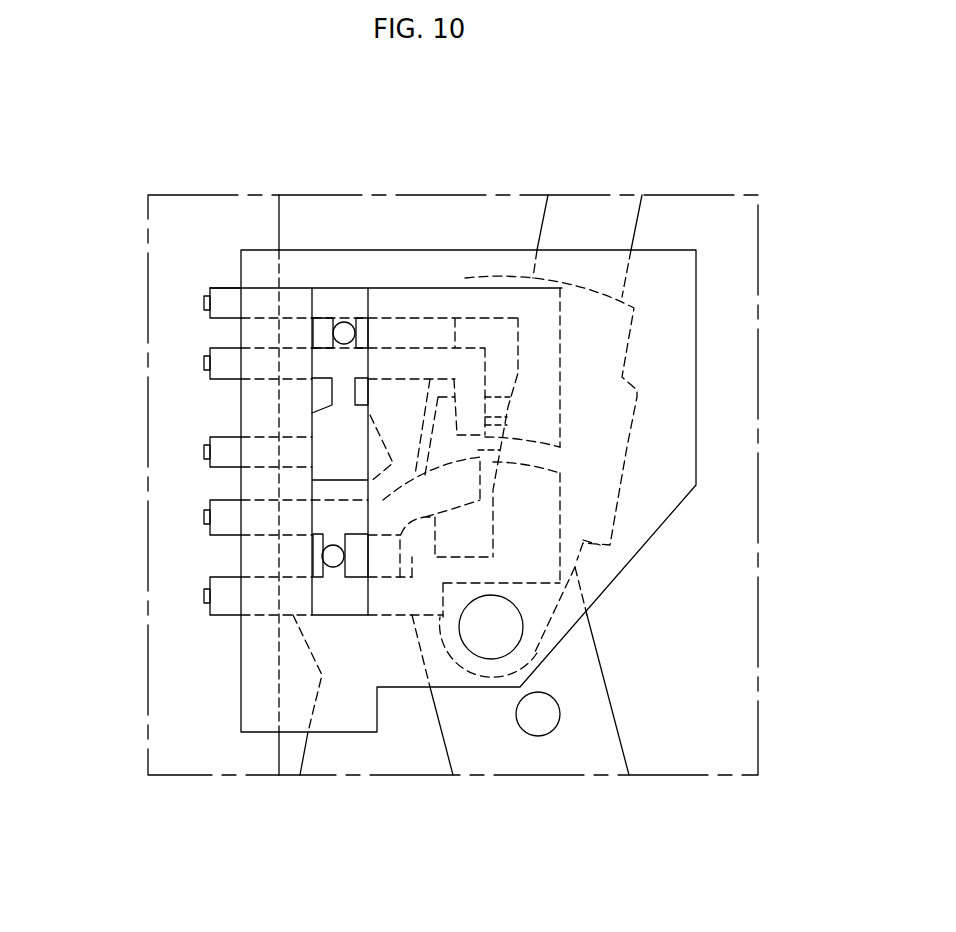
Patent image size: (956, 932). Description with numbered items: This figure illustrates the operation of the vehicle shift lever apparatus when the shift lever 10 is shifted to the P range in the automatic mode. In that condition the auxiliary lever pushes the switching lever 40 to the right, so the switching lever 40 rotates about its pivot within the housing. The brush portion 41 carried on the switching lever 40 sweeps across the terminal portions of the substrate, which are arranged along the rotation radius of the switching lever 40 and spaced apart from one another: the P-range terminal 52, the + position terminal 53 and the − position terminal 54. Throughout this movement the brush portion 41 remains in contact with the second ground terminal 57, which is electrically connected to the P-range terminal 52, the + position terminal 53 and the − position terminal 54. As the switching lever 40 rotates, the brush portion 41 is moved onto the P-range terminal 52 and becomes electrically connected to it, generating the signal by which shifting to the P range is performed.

The shift lever 10 is at (710, 648).
The switching lever 40 is at (598, 455).
The brush portion 41 is at (452, 447).
The P-range terminal 52 is at (537, 403).
The + position terminal 53 is at (470, 410).
The − position terminal 54 is at (332, 453).
The second ground terminal 57 is at (520, 535).